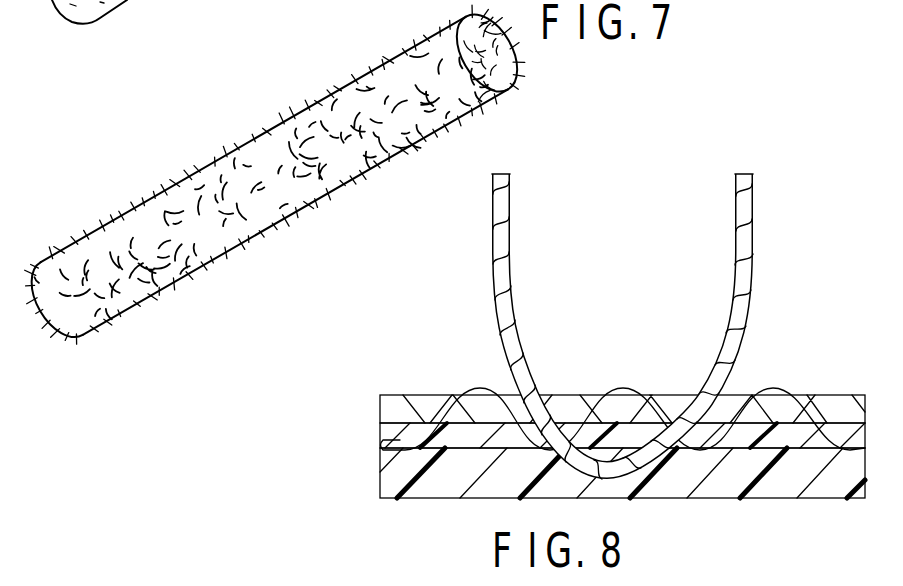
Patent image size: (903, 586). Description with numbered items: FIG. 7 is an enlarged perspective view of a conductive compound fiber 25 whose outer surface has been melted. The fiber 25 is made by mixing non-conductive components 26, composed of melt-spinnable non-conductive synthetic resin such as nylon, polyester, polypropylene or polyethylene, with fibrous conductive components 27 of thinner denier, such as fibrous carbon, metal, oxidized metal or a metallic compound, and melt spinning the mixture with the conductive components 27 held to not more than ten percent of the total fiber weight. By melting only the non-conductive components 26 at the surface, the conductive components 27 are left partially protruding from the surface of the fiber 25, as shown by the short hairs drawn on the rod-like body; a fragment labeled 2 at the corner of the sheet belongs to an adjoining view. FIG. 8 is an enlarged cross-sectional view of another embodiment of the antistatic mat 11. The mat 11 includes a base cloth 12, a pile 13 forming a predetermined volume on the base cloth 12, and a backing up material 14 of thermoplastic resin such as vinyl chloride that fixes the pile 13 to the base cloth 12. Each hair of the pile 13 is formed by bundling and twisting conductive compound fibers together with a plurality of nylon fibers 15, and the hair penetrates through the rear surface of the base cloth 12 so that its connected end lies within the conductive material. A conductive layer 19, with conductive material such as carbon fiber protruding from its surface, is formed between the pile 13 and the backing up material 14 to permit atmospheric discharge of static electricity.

In FIG. 7, the fragment of adjacent figure 2 is at (163, 0).
In FIG. 7, the conductive compound fiber 25 is at (274, 179).
In FIG. 7, the non-conductive components 26 is at (274, 179).
In FIG. 7, the conductive components 27 is at (304, 72).
In FIG. 8, the antistatic mat 11 is at (639, 363).
In FIG. 8, the base cloth 12 is at (622, 409).
In FIG. 8, the pile 13 is at (656, 321).
In FIG. 8, the backing up material 14 is at (622, 473).
In FIG. 8, the nylon fibers 15 is at (752, 183).
In FIG. 8, the conductive layer 19 is at (622, 435).